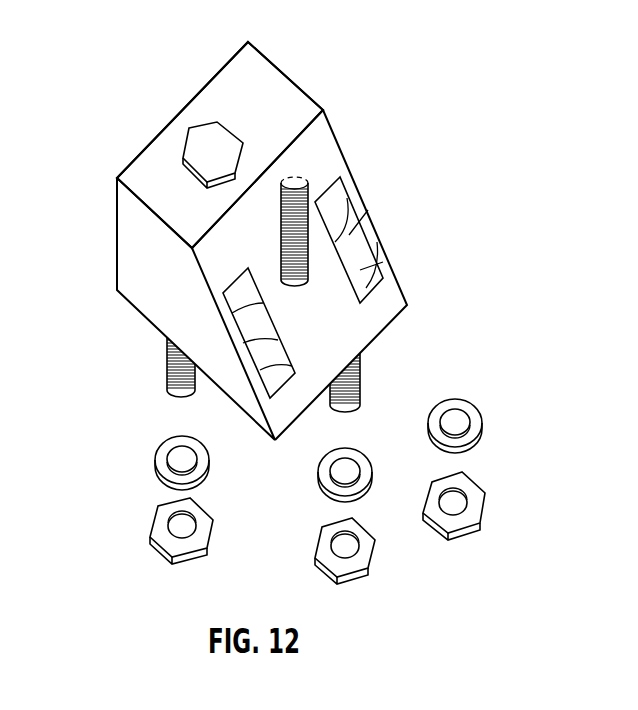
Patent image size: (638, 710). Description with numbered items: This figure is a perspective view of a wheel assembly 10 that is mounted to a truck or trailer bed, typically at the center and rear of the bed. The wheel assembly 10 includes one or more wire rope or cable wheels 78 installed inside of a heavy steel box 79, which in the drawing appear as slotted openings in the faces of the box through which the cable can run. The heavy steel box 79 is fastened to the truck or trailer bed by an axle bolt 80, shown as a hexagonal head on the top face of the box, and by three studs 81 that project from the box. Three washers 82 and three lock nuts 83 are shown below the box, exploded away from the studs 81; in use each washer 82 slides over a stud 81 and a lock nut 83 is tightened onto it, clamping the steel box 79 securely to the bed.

The wheel assembly 10 is at (107, 63).
The wire rope or cable wheels 78 is at (355, 232).
The heavy steel box 79 is at (294, 92).
The axle bolt 80 is at (218, 130).
The studs 81 is at (299, 174).
The washers 82 is at (155, 462).
The lock nuts 83 is at (150, 525).